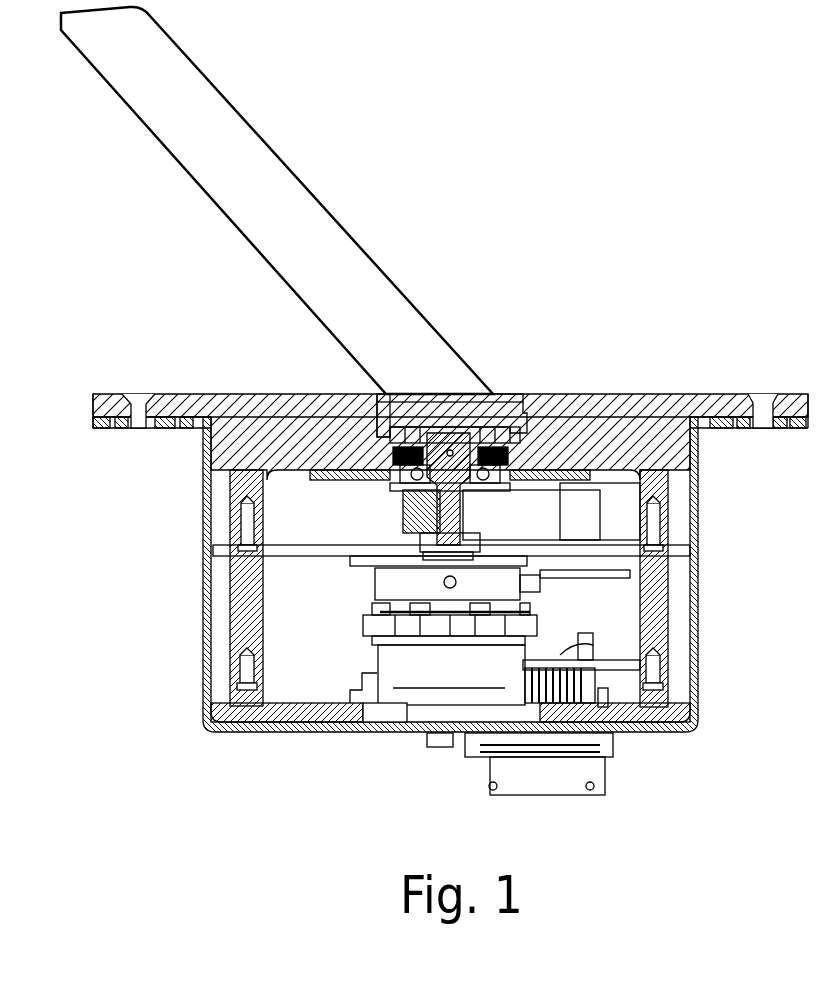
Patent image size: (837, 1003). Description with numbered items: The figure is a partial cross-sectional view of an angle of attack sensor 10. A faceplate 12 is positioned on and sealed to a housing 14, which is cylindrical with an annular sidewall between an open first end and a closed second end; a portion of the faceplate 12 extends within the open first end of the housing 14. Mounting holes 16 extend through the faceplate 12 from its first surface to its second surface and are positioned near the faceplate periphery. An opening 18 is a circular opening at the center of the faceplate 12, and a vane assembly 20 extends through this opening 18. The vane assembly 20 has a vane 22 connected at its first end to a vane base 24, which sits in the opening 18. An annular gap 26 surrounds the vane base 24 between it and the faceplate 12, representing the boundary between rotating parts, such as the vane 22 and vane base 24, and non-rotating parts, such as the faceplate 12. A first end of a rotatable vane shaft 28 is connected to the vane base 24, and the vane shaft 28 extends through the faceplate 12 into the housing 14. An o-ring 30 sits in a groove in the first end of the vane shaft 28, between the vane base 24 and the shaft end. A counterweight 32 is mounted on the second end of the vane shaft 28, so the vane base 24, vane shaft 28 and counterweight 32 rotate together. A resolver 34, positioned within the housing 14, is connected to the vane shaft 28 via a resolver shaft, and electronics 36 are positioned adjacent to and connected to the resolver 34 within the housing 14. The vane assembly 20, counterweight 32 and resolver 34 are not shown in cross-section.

The angle of attack sensor 10 is at (74, 235).
The faceplate 12 is at (658, 420).
The housing 14 is at (700, 582).
The mounting holes 16 is at (137, 410).
The opening 18 is at (377, 393).
The vane assembly 20 is at (465, 309).
The vane 22 is at (253, 165).
The vane base 24 is at (487, 413).
The annular gap 26 is at (523, 393).
The vane shaft 28 is at (385, 493).
The o-ring 30 is at (387, 430).
The counterweight 32 is at (562, 505).
The resolver 34 is at (424, 667).
The electronics 36 is at (593, 645).